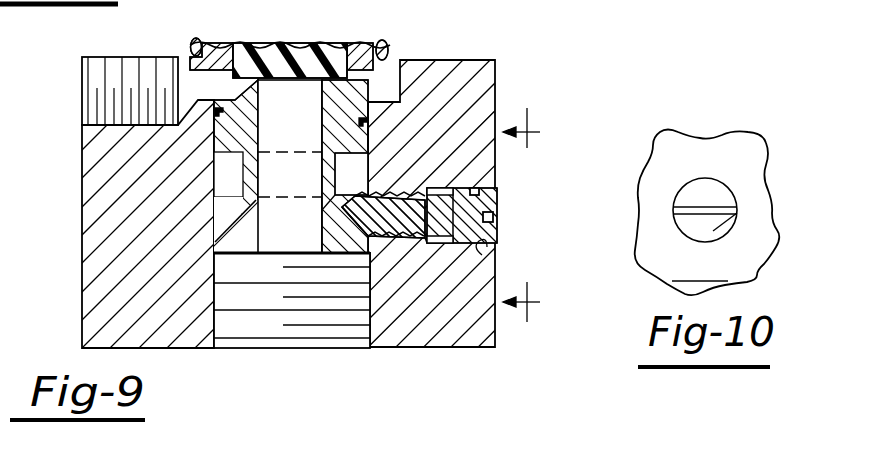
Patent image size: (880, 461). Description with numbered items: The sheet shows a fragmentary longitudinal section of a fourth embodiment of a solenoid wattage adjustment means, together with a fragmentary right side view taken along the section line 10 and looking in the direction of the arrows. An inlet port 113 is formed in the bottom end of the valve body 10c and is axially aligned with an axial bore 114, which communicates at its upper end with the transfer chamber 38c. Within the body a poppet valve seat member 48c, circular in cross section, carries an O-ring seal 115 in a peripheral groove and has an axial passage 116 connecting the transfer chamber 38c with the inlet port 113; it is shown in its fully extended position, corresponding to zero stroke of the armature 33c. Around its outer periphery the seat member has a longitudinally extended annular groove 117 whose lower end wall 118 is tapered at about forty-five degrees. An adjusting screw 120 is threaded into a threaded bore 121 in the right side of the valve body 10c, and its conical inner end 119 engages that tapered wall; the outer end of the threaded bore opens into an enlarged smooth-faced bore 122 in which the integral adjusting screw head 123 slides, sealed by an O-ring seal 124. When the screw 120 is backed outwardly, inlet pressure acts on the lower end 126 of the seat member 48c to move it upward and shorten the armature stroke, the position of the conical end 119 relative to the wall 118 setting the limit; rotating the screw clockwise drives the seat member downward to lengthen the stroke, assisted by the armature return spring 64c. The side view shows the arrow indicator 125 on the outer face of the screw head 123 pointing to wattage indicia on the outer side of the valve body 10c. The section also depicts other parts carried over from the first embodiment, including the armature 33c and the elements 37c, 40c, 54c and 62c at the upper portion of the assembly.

In FIG. 9, the section line 10 is at (538, 216).
In FIG. 9, the valve body 10c is at (413, 230).
In FIG. 10, the valve body 10c is at (638, 166).
In FIG. 9, the armature 33c is at (388, 40).
In FIG. 9, the collar member 37c is at (193, 50).
In FIG. 9, the transfer chamber 38c is at (396, 85).
In FIG. 9, the knurled sleeve 40c is at (110, 125).
In FIG. 9, the poppet valve seat member 48c is at (378, 145).
In FIG. 9, the electrode stem 54c is at (312, 80).
In FIG. 9, the cap member 62c is at (309, 36).
In FIG. 9, the armature return spring 64c is at (198, 38).
In FIG. 9, the inlet port 113 is at (218, 330).
In FIG. 9, the axial bore 114 is at (212, 231).
In FIG. 9, the O-ring seal 115 is at (370, 118).
In FIG. 9, the axial bore or passage 116 is at (326, 238).
In FIG. 9, the annular groove 117 is at (346, 165).
In FIG. 9, the lower end wall 118 is at (346, 206).
In FIG. 9, the conical inner end 119 is at (360, 247).
In FIG. 9, the adjusting screw 120 is at (392, 240).
In FIG. 9, the threaded bore 121 is at (420, 263).
In FIG. 9, the smooth-faced bore 122 is at (452, 187).
In FIG. 9, the adjusting screw head 123 is at (458, 207).
In FIG. 10, the adjusting screw head 123 is at (737, 213).
In FIG. 9, the O-ring seal 124 is at (482, 258).
In FIG. 10, the arrow indicator 125 is at (704, 186).
In FIG. 9, the lower end 126 is at (247, 253).